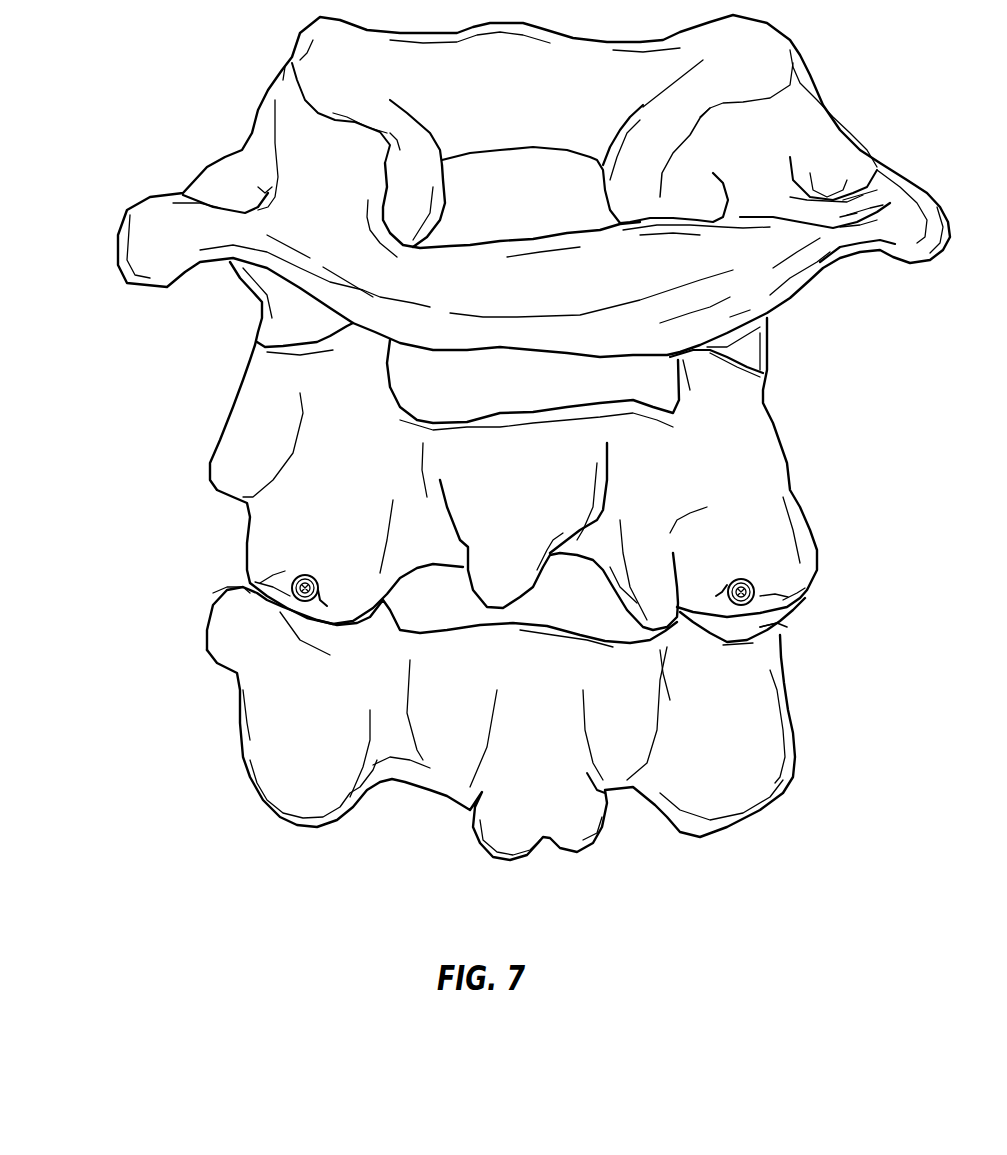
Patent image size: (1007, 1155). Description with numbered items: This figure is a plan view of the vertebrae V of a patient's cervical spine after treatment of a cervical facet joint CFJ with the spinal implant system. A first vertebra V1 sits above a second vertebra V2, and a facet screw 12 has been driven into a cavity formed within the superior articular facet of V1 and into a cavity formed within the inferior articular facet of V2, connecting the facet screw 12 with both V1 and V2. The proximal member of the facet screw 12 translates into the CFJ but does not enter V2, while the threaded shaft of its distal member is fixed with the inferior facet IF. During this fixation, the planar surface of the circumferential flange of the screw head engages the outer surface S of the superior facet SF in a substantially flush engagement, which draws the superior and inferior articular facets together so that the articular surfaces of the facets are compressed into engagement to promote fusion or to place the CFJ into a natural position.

The vertebrae V is at (113, 342).
The first vertebra V1 is at (257, 465).
The second vertebra V2 is at (297, 753).
The facet screw 12 is at (293, 580).
The outer surface of the superior facet S is at (327, 603).
The superior facet SF is at (273, 575).
The cervical facet joint CFJ is at (273, 587).
The inferior facet IF is at (243, 600).